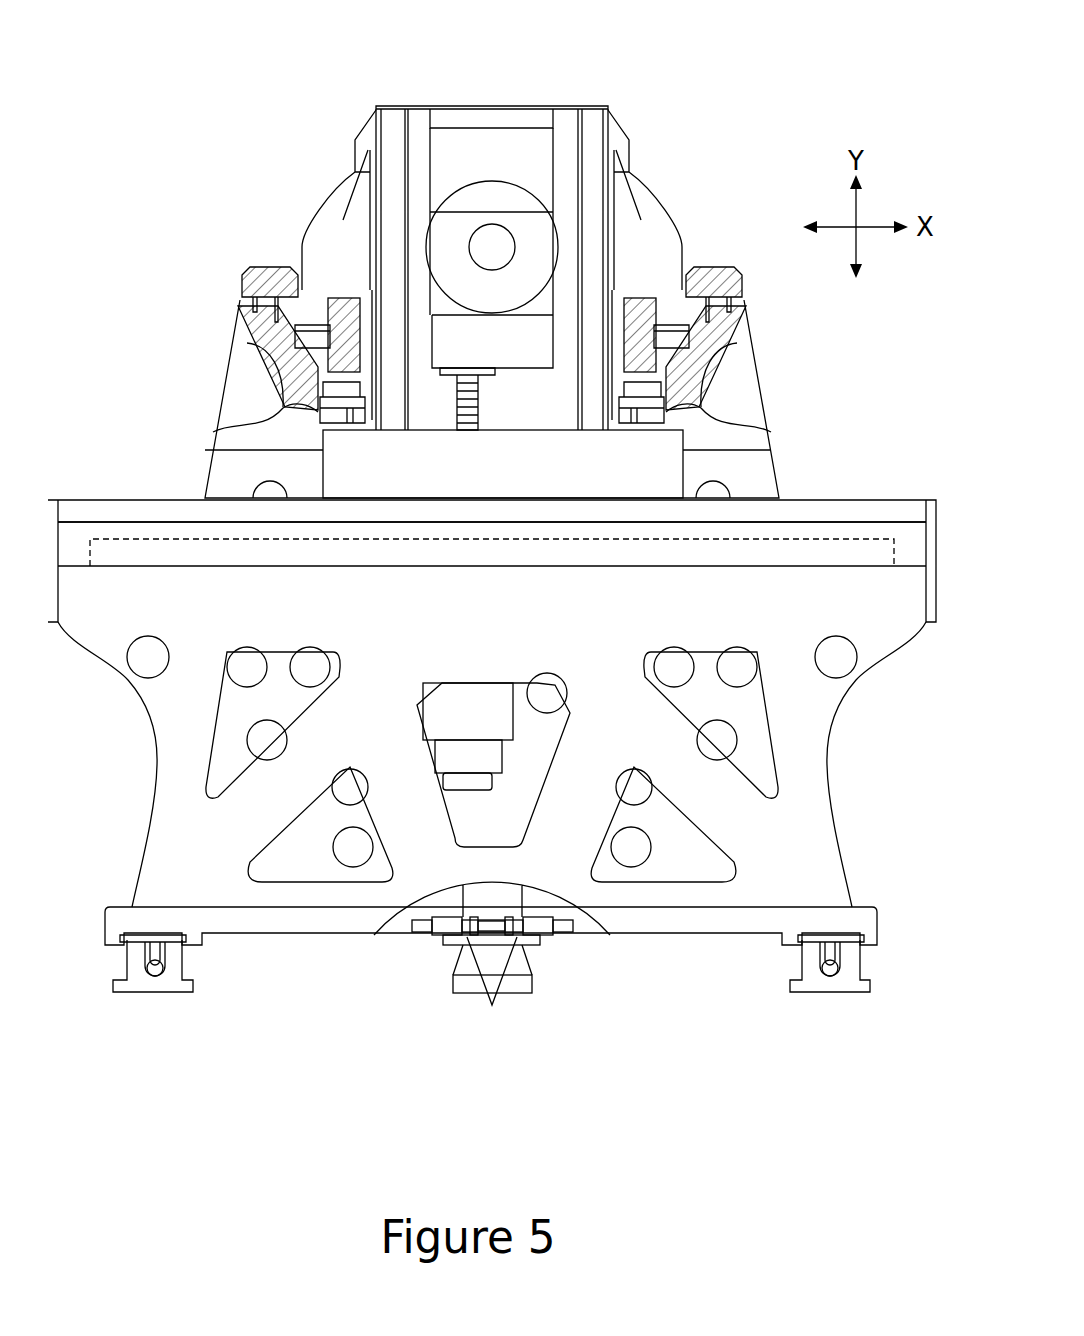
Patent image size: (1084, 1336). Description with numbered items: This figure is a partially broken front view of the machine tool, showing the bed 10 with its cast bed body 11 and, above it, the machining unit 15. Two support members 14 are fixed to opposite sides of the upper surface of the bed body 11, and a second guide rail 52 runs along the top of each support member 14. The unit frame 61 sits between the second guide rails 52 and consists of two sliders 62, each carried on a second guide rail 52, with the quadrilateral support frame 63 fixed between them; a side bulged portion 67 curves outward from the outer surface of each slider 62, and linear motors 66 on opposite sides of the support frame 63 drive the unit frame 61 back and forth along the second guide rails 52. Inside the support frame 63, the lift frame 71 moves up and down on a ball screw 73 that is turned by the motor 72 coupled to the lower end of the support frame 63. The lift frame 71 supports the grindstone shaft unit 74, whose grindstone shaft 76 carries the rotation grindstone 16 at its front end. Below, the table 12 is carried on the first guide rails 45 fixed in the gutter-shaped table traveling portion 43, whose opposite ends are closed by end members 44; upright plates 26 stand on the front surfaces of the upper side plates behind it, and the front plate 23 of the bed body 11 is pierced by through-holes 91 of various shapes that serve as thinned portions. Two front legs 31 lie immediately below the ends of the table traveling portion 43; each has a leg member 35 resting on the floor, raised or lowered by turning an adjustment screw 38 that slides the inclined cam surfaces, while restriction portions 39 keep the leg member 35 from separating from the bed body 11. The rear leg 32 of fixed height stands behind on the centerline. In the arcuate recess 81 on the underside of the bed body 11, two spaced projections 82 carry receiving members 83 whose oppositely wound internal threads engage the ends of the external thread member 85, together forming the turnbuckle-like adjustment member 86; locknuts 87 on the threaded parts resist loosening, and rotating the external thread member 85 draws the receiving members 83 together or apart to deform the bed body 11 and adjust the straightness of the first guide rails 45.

The bed 10 is at (501, 540).
The bed body 11 is at (501, 765).
The table 12 is at (522, 428).
The support member 14 is at (245, 375).
The machining unit 15 is at (491, 216).
The rotation grindstone 16 is at (527, 208).
The front plate 23 is at (300, 910).
The upright plate 26 is at (222, 478).
The front leg 31 is at (152, 995).
The rear leg 32 is at (520, 995).
The leg member 35 is at (130, 968).
The adjustment screw 38 is at (182, 966).
The restriction portion 39 is at (170, 950).
The table traveling portion 43 is at (584, 512).
The end member 44 is at (60, 535).
The first guide rail 45 is at (138, 539).
The second guide rail 52 is at (252, 292).
The unit frame 61 is at (542, 104).
The slider 62 is at (315, 215).
The support frame 63 is at (500, 114).
The linear motor 66 is at (275, 325).
The side bulged portion 67 is at (352, 160).
The lift frame 71 is at (452, 128).
The motor 72 is at (467, 790).
The ball screw 73 is at (476, 395).
The grindstone shaft unit 74 is at (475, 183).
The grindstone shaft 76 is at (486, 247).
The recess 81 is at (530, 882).
The projection 82 is at (410, 915).
The receiving member 83 is at (440, 935).
The external thread member 85 is at (488, 920).
The adjustment member 86 is at (575, 962).
The locknut 87 is at (493, 1000).
The through-hole 91 is at (150, 650).